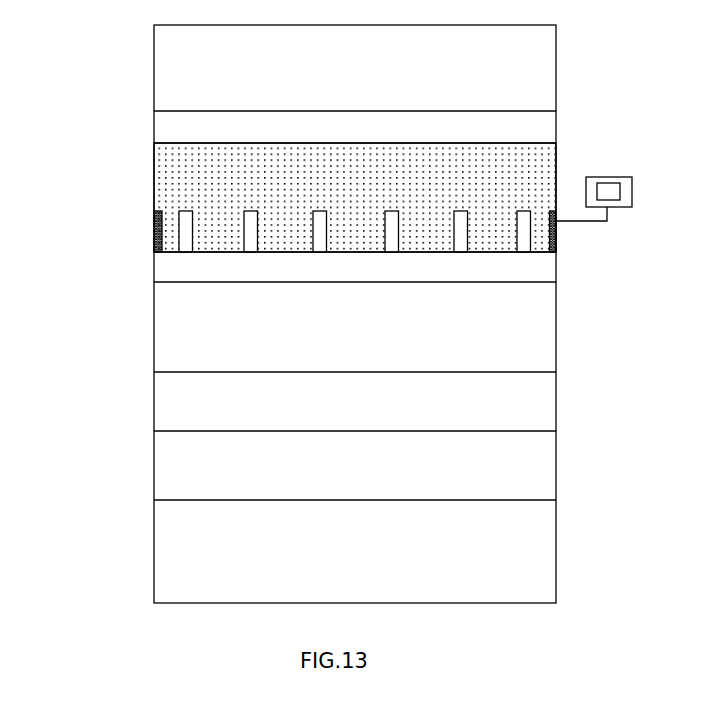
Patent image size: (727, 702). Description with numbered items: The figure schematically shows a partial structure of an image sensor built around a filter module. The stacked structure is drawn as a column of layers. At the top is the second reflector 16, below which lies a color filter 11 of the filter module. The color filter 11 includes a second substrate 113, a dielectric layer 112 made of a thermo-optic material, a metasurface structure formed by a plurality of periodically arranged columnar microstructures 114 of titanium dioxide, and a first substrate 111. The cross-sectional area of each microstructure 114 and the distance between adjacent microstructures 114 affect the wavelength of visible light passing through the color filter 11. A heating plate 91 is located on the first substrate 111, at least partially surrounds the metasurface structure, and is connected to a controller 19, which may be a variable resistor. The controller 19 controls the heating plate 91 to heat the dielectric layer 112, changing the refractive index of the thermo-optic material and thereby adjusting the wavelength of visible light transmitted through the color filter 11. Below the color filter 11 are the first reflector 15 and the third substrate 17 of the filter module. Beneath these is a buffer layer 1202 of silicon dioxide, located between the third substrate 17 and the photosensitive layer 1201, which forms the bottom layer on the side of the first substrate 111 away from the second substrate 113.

The color filter 11 is at (287, 196).
The first substrate 111 is at (305, 267).
The dielectric layer 112 is at (170, 186).
The second substrate 113 is at (165, 127).
The microstructure 114 is at (180, 231).
The first reflector 15 is at (552, 339).
The second reflector 16 is at (552, 50).
The third substrate 17 is at (552, 409).
The controller 19 is at (611, 192).
The heating plate 91 is at (557, 234).
The photosensitive layer 1201 is at (552, 568).
The buffer layer 1202 is at (552, 474).